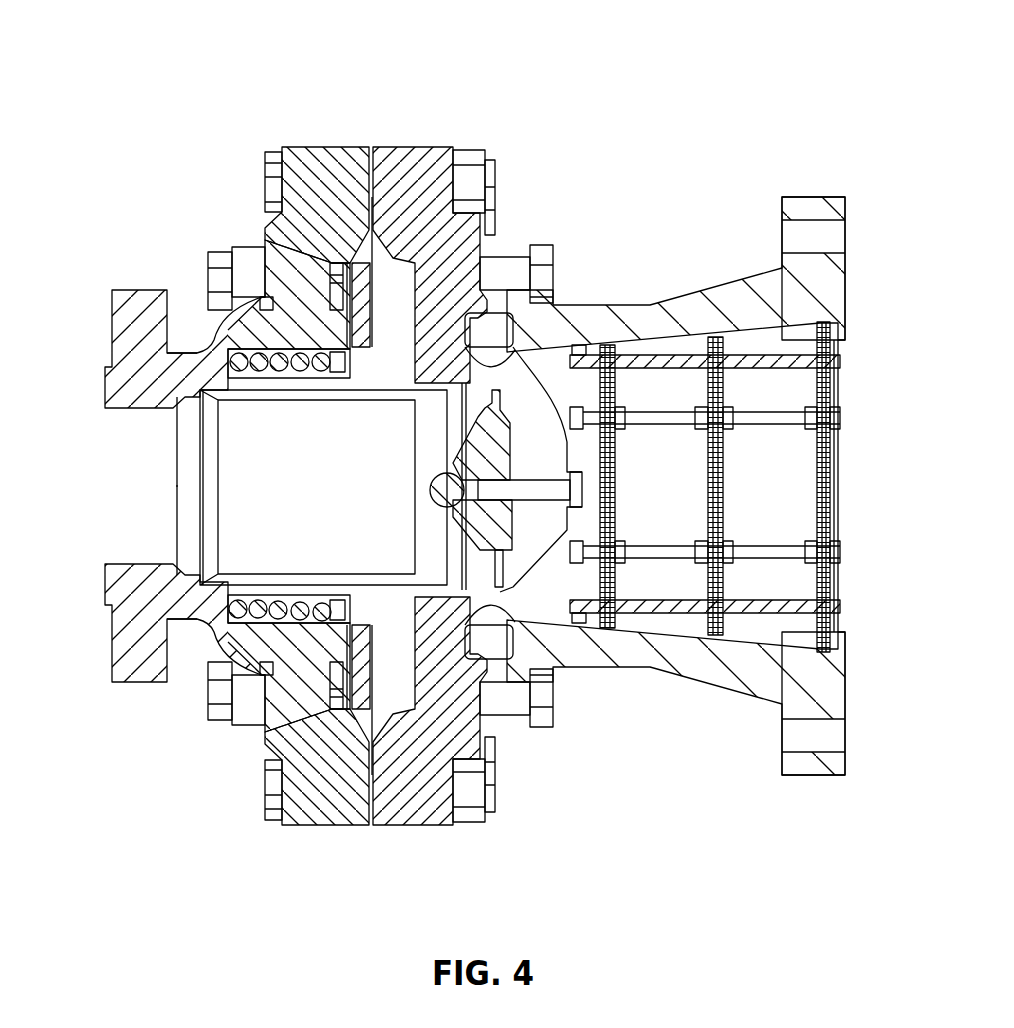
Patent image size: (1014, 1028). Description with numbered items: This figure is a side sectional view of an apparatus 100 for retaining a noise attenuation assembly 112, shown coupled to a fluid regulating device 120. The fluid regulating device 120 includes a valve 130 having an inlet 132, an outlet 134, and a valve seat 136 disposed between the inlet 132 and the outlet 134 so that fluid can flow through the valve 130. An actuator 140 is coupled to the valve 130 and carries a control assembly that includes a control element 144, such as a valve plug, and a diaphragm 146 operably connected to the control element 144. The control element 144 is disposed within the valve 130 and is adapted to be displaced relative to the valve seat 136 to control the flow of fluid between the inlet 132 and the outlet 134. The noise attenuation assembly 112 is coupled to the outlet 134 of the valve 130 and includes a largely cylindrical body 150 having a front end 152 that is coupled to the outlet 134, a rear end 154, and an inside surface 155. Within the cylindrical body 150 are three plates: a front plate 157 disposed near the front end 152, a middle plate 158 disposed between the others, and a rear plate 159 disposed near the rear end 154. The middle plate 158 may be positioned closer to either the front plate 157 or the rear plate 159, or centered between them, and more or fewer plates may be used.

The apparatus 100 is at (650, 572).
The noise attenuation assembly 112 is at (676, 272).
The fluid regulating device 120 is at (241, 64).
The valve 130 is at (195, 486).
The inlet 132 is at (98, 620).
The outlet 134 is at (478, 703).
The valve seat 136 is at (478, 707).
The actuator 140 is at (396, 213).
The control element 144 is at (372, 317).
The diaphragm 146 is at (343, 262).
The cylindrical body 150 is at (622, 305).
The front end 152 is at (555, 641).
The rear end 154 is at (786, 296).
The inside surface 155 is at (762, 342).
The front plate 157 is at (617, 483).
The middle plate 158 is at (724, 466).
The rear plate 159 is at (839, 484).